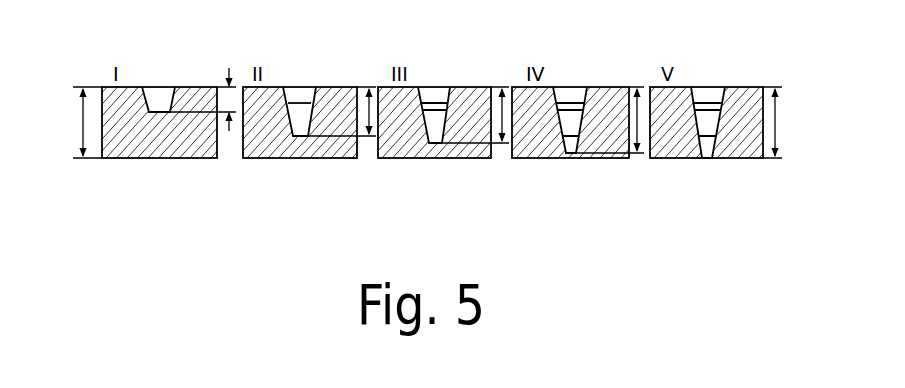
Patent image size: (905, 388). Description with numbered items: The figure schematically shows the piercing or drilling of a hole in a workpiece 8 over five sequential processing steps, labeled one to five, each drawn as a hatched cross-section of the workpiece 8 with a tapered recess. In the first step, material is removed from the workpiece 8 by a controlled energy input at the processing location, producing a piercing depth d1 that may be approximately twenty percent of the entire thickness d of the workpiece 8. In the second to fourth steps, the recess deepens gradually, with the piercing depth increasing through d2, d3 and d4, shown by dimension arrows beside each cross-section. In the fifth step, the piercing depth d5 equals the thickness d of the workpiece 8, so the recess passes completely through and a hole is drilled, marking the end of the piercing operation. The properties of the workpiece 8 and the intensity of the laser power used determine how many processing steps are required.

The workpiece 8 is at (136, 147).
The thickness of the workpiece d is at (80, 122).
The piercing depth in processing step I d1 is at (226, 98).
The piercing depth in processing step II d2 is at (366, 98).
The piercing depth in processing step III d3 is at (499, 98).
The piercing depth in processing step IV d4 is at (633, 98).
The piercing depth in processing step V d5 is at (771, 98).